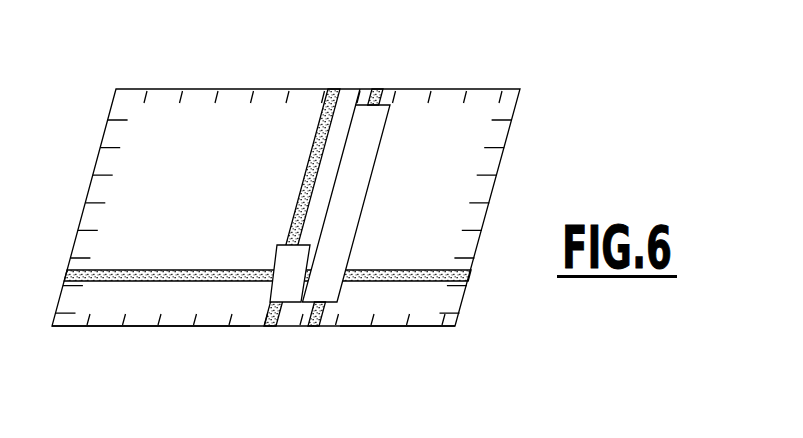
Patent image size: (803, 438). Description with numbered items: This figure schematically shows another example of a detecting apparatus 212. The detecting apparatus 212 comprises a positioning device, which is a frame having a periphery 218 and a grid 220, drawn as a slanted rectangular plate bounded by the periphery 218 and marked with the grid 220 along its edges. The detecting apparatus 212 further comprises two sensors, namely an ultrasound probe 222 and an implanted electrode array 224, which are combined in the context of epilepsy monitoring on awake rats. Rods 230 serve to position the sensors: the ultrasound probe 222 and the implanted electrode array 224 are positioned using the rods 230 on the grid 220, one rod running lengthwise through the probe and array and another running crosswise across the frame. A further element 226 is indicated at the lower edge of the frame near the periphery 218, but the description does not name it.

The detecting apparatus 212 is at (514, 50).
The periphery 218 is at (145, 326).
The grid 220 is at (85, 154).
The ultrasound probe 222 is at (342, 307).
The implanted electrode array 224 is at (262, 300).
The second edge of panel 226 is at (417, 328).
The rods 230 is at (316, 115).